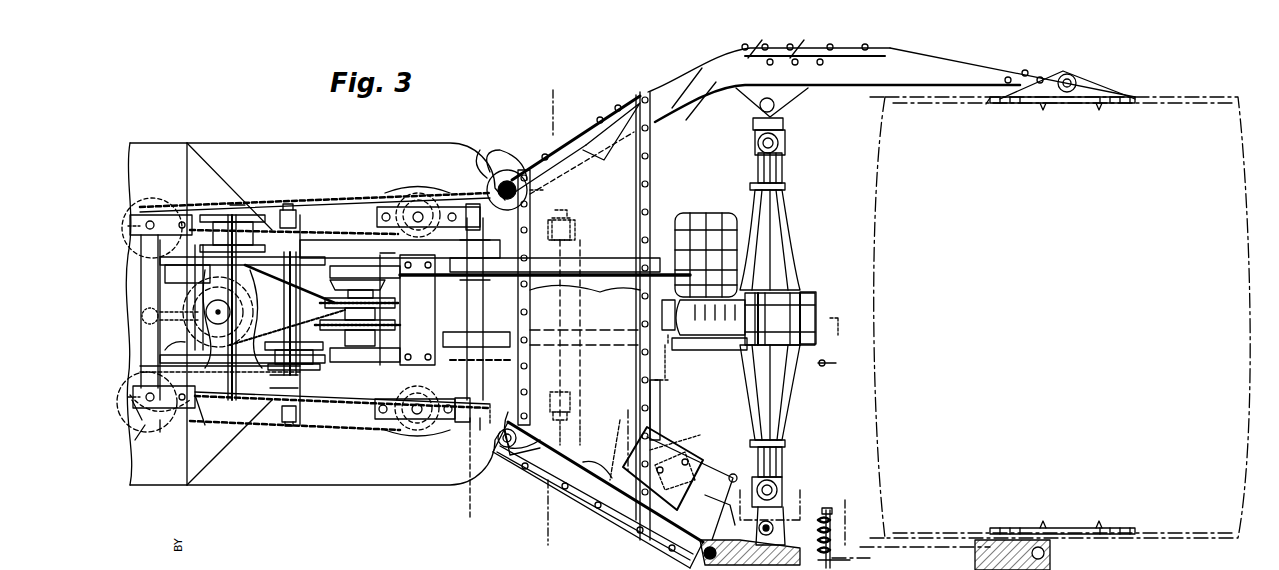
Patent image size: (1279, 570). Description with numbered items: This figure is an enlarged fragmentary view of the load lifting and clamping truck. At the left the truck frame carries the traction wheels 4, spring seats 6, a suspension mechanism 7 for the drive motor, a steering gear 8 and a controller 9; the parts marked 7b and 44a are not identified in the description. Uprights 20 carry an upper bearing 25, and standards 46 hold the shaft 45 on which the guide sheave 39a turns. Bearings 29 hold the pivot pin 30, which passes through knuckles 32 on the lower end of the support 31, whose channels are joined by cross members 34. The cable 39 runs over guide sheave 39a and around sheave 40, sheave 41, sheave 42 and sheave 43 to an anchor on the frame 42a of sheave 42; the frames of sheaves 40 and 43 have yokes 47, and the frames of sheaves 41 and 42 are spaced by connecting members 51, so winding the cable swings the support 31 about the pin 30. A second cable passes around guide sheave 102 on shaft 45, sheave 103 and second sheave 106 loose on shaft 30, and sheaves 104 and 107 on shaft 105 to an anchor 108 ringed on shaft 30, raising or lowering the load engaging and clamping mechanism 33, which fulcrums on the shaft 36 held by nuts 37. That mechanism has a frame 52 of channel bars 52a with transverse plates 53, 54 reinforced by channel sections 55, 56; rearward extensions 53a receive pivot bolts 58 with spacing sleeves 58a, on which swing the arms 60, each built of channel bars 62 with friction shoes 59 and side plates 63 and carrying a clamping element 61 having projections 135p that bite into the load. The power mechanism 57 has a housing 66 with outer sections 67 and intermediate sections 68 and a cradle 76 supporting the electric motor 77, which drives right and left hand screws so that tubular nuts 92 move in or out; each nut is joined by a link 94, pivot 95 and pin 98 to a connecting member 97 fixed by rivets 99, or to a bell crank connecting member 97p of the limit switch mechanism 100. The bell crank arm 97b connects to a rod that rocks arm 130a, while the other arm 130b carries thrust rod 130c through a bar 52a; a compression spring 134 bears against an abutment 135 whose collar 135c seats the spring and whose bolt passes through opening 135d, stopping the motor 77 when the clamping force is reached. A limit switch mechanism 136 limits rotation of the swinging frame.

The vehicle body 7b is at (296, 478).
The cable 39 is at (316, 185).
The guide sheave 39a is at (228, 207).
The sheave 41 is at (160, 215).
The knuckles 32 is at (298, 212).
The sheave 40 is at (436, 200).
The sheave 43 is at (400, 428).
The yokes 47 is at (460, 424).
The guide sheave 102 is at (260, 392).
The sheave 103 is at (300, 378).
The bolt 58 is at (498, 190).
The spacing sleeve 58a is at (492, 185).
The extensions 53a is at (478, 165).
The channel section 56 is at (533, 191).
The friction plates or shoes 59 is at (512, 172).
The side plates 63 is at (548, 140).
The seats 6 is at (549, 315).
The channel section 55 is at (652, 160).
The transverse plate 54 is at (652, 196).
The channel bars 62 is at (692, 70).
The relatively movable arms 60 is at (1012, 69).
The rivets 99 is at (782, 41).
The load clamping elements 61 is at (1036, 108).
The projections 135p is at (992, 105).
The power mechanism 57 is at (1030, 317).
The outer housing sections 67 is at (788, 232).
The housing 66 is at (815, 335).
The intermediate housing sections 68 is at (816, 300).
The controller 9 is at (753, 314).
The steering gear 8 is at (745, 364).
The tubular nut 92 is at (784, 172).
The link 94 is at (784, 125).
The pivot 95 is at (779, 141).
The connecting member 97 is at (790, 100).
The connecting member (bell crank) 97p is at (732, 550).
The pin 98 is at (759, 106).
The electric motor 77 is at (716, 220).
The cradle 76 is at (733, 262).
The channel bars 52a is at (450, 288).
The support 31 is at (400, 320).
The cross members 34 is at (442, 309).
The bearings 29 is at (305, 252).
The sheave 104 is at (396, 324).
The shaft 105 is at (385, 288).
The second sheave 107 is at (395, 304).
The second sheave 106 is at (305, 282).
The anchor 108 is at (275, 272).
The shaft or pivot pin 30 is at (290, 290).
The shaft 45 is at (212, 300).
The standards 46 is at (181, 320).
The uprights 20 is at (210, 325).
The upper bearing 25 is at (175, 340).
The limit switch mechanism 136 is at (220, 359).
The sheave 42 is at (147, 413).
The frame 42a is at (168, 431).
The bracket 44a is at (203, 419).
The connecting members 51 is at (138, 420).
The load engaging and clamping mechanism 33 is at (658, 545).
The suspension mechanism 7 is at (669, 467).
The transverse plate 53 is at (552, 428).
The frame 52 is at (590, 430).
The traction wheels 4 is at (716, 455).
The nuts 37 is at (570, 222).
The shaft or pivot pin 36 is at (568, 326).
The bell crank arm 130a is at (700, 440).
The bell crank arm 130b is at (695, 480).
The thrust rod 130c is at (662, 400).
The limit switch mechanism 100 is at (692, 488).
The bell crank arm 97b is at (712, 512).
The compression spring 134 is at (840, 538).
The abutment 135 is at (832, 510).
The collar 135c is at (838, 516).
The opening 135d is at (911, 556).